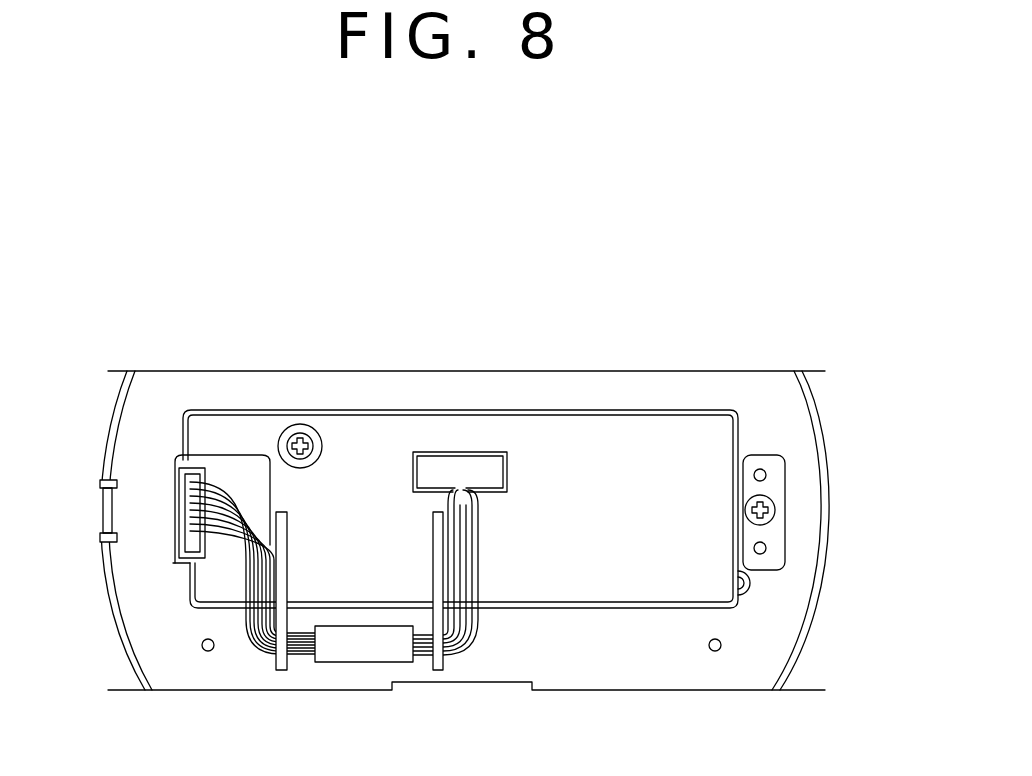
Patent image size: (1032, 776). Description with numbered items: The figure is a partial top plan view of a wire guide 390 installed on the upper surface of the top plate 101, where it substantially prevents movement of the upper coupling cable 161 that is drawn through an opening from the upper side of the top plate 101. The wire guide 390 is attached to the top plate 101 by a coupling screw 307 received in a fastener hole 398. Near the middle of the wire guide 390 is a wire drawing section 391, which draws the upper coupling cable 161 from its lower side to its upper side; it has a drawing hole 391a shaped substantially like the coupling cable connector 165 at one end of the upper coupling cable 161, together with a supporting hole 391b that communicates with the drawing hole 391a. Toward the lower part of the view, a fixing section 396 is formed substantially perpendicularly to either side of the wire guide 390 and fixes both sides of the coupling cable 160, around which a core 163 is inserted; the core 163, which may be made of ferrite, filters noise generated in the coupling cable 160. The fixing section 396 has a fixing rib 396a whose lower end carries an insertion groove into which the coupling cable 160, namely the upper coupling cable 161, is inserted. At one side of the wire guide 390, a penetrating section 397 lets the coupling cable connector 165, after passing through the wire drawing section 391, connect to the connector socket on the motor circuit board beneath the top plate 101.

The top plate 101 is at (817, 402).
The coupling cable 160 is at (225, 617).
The upper coupling cable 161 is at (246, 645).
The core 163 is at (367, 663).
The coupling cable connector 165 is at (180, 540).
The coupling screw 307 is at (300, 424).
The wire guide 390 is at (590, 410).
The wire drawing section 391 is at (533, 313).
The drawing hole 391a is at (460, 452).
The supporting hole 391b is at (482, 510).
The fixing section 396 is at (452, 670).
The fixing rib 396a is at (283, 672).
The penetrating section 397 is at (213, 455).
The fastener hole 398 is at (317, 430).